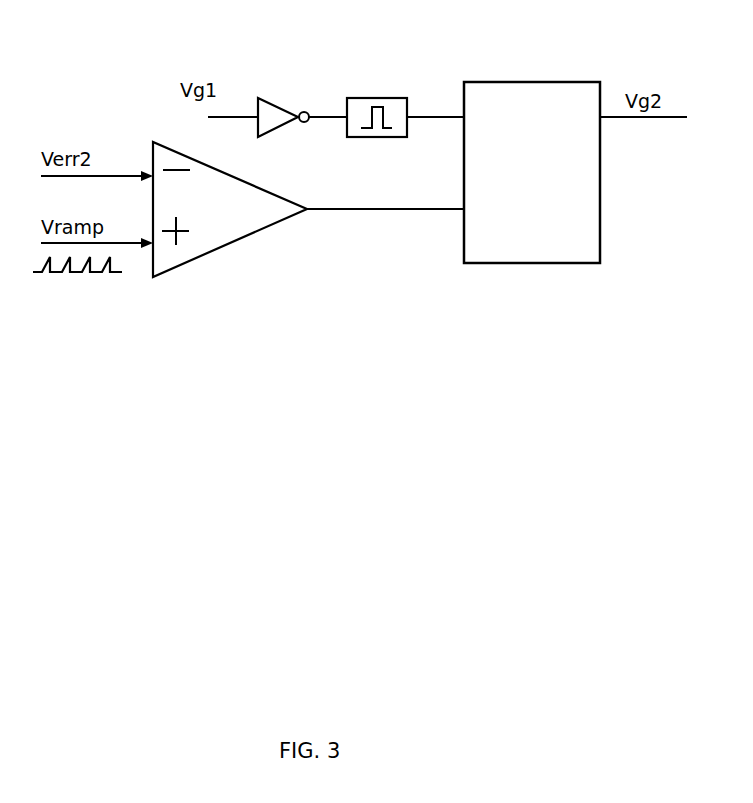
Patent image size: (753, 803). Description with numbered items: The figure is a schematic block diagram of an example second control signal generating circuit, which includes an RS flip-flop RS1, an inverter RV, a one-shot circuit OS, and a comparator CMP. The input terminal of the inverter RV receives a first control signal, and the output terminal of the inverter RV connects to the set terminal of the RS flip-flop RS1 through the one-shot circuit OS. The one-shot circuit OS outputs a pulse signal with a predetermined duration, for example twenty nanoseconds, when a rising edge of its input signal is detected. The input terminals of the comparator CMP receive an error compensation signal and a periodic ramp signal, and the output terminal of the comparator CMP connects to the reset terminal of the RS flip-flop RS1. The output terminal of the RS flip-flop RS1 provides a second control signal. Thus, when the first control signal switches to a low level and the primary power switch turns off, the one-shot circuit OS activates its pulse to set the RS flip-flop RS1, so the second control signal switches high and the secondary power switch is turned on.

The comparator CMP is at (230, 209).
The inverter RV is at (278, 101).
The one-shot circuit OS is at (372, 98).
The RS flip-flop RS1 is at (520, 81).